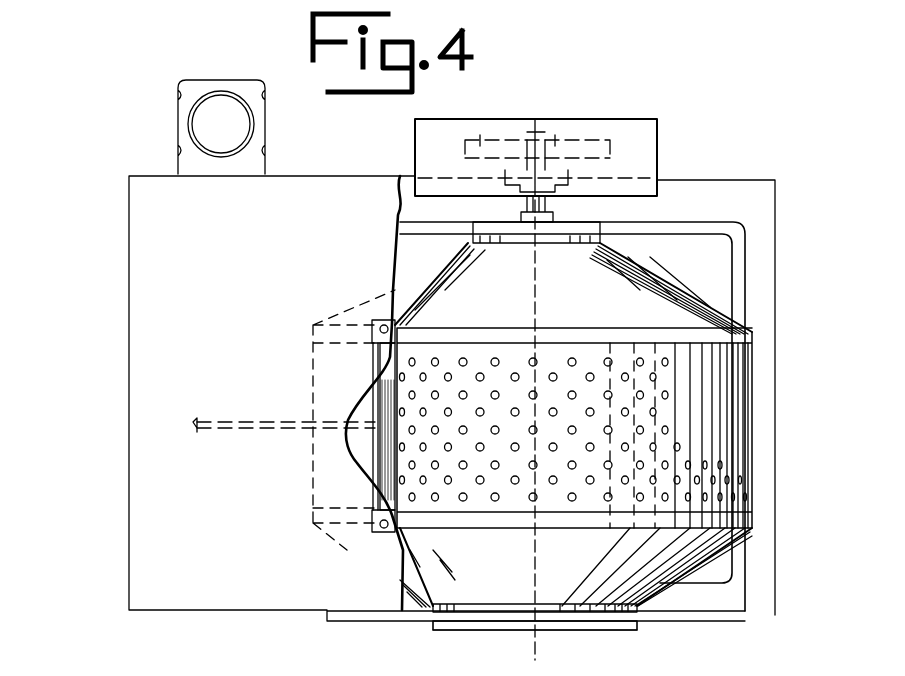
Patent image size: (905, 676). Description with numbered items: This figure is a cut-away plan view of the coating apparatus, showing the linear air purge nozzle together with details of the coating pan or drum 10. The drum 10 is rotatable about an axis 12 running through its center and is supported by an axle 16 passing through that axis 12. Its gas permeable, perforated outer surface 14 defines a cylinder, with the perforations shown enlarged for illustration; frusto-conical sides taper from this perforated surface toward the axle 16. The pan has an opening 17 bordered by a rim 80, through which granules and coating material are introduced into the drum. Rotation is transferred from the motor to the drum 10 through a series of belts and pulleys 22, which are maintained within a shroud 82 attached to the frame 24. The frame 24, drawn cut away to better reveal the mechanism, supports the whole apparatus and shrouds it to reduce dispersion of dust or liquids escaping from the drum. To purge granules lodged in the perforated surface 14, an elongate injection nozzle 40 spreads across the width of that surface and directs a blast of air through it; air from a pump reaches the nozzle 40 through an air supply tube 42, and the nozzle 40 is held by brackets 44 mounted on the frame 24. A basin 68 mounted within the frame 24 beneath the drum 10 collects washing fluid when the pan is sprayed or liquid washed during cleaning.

The coating pan 10 is at (655, 577).
The axis 12 is at (530, 590).
The perforated outer surface 14 is at (745, 478).
The axle 16 is at (545, 132).
The circular opening 17 is at (565, 630).
The belts and pulleys 22 is at (480, 133).
The frame 24 is at (129, 365).
The injection nozzle 40 is at (372, 355).
The air supply tube 42 is at (258, 432).
The brackets 44 is at (395, 325).
The basin 68 is at (725, 272).
The rim 80 is at (600, 630).
The shroud 82 is at (650, 146).